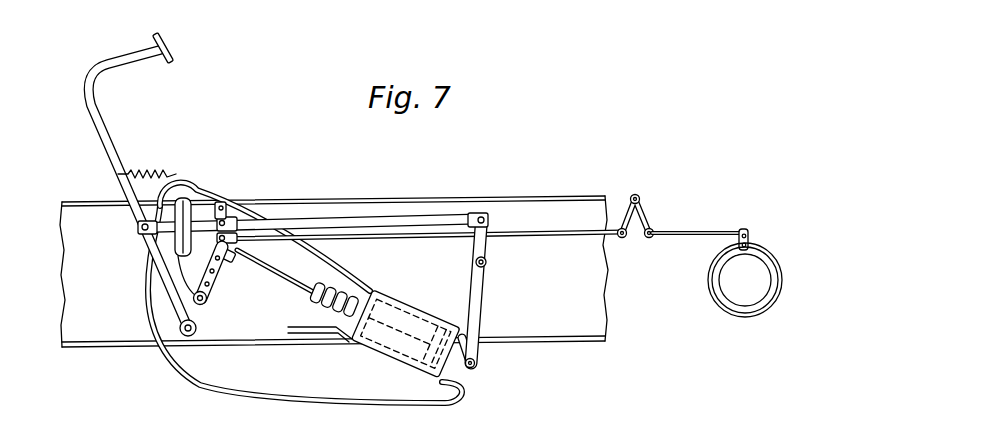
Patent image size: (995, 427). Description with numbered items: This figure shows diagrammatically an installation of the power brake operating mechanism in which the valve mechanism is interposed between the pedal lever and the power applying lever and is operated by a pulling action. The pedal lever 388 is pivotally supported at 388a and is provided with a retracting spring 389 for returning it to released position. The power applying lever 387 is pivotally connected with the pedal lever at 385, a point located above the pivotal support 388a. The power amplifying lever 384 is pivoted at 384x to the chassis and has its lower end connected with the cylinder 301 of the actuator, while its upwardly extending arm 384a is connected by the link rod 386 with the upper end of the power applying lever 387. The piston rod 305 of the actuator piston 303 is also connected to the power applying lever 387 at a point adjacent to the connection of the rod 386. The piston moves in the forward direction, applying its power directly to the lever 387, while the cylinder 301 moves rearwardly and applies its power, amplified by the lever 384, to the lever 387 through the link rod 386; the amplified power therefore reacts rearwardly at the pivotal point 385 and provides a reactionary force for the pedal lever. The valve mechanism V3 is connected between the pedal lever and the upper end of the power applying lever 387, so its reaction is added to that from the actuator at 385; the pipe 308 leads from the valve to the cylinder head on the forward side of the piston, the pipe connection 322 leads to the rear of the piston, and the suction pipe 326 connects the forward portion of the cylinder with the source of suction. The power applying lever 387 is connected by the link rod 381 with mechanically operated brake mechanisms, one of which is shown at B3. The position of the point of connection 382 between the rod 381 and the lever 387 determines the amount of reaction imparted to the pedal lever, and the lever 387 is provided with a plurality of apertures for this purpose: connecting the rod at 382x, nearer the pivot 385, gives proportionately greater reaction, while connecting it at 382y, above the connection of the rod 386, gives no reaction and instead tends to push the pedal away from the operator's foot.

The pedal lever 388 is at (108, 140).
The pivotal support of the pedal lever 388a is at (190, 336).
The retracting spring 389 is at (140, 175).
The valve mechanism V3 is at (185, 197).
The link rod 386 is at (428, 214).
The link rod 381 is at (430, 243).
The point of connection 382 is at (239, 241).
The alternative point of connection 382x is at (212, 272).
The alternative point of connection 382y is at (222, 205).
The power applying lever 387 is at (214, 291).
The pivotal connection 385 is at (203, 304).
The piston rod 305 is at (298, 287).
The pipe 308 is at (350, 283).
The pipe connection 322 is at (273, 392).
The cylinder 301 is at (387, 357).
The actuator piston 303 is at (443, 315).
The suction pipe 326 is at (317, 330).
The power amplifying lever 384 is at (488, 310).
The upwardly extending arm 384a is at (480, 243).
The pivot 384x is at (486, 265).
The brake mechanism B3 is at (700, 256).